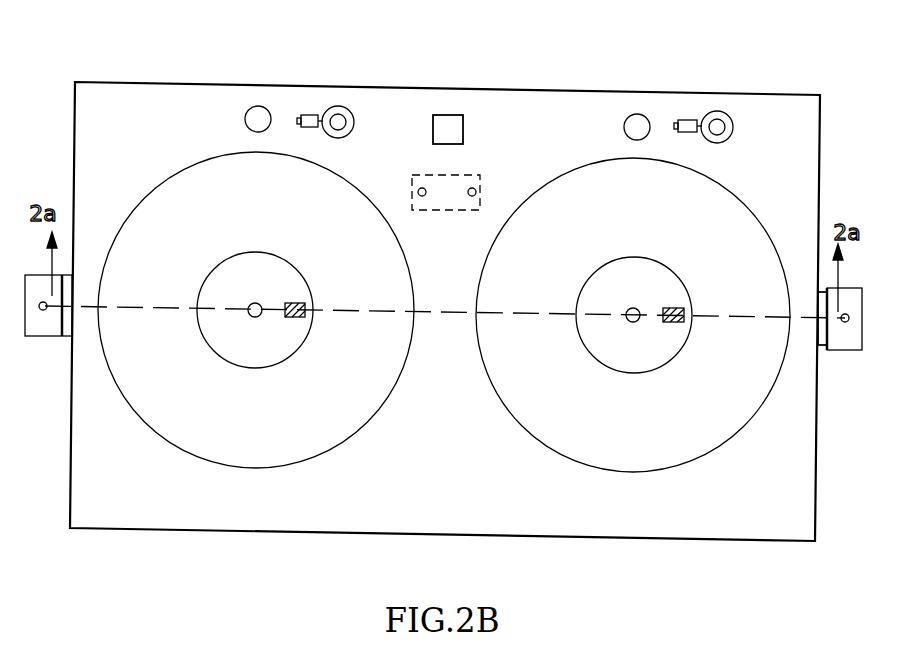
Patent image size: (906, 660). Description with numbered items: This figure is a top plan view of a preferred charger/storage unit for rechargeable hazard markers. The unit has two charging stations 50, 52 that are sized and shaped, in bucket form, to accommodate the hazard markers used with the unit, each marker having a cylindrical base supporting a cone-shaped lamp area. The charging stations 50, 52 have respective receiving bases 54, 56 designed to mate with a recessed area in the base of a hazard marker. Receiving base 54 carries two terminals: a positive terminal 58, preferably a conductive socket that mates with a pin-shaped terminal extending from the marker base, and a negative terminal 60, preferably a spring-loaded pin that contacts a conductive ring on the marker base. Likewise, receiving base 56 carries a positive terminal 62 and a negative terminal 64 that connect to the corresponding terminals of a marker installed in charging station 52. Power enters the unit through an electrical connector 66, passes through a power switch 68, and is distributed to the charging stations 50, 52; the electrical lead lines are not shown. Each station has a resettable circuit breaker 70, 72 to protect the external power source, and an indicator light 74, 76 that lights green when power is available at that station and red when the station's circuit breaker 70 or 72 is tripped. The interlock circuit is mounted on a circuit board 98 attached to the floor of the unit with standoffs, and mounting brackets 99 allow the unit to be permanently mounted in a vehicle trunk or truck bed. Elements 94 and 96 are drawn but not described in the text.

The charging station 50 is at (122, 224).
The charging station 52 is at (501, 232).
The receiving base 54 is at (253, 252).
The receiving base 56 is at (655, 370).
The positive terminal 58 is at (255, 303).
The negative terminal 60 is at (298, 303).
The positive terminal 62 is at (633, 308).
The negative terminal 64 is at (677, 308).
The electrical connector 66 is at (828, 330).
The power switch 68 is at (462, 118).
The resettable circuit breaker 70 is at (354, 118).
The resettable circuit breaker 72 is at (733, 120).
The indicator light 74 is at (246, 112).
The indicator light 76 is at (626, 118).
The first switch 94 is at (307, 114).
The second switch 96 is at (688, 120).
The circuit board 98 is at (412, 192).
The mounting brackets 99 is at (38, 337).